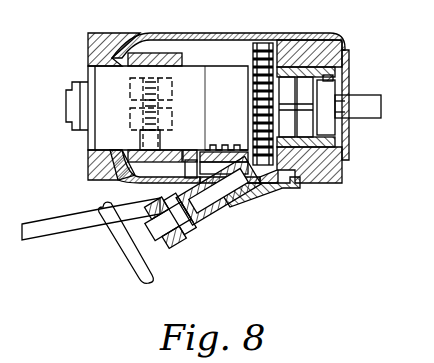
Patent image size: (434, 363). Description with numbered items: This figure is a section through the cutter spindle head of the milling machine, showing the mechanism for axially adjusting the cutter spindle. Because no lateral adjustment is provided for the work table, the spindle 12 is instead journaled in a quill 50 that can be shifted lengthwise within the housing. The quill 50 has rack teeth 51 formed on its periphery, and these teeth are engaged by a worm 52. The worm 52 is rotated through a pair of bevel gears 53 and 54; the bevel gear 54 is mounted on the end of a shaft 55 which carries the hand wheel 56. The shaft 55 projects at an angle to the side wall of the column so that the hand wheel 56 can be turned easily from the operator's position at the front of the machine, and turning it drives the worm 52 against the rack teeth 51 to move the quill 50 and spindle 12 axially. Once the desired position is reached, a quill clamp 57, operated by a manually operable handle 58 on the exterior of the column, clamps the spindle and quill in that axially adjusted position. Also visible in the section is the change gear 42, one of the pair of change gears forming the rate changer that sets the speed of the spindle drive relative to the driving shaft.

The spindle 12 is at (85, 84).
The change gear 42 is at (250, 80).
The quill 50 is at (205, 68).
The rack teeth 51 is at (228, 146).
The worm 52 is at (243, 206).
The bevel gear 53 is at (205, 150).
The bevel gear 54 is at (220, 232).
The shaft 55 is at (168, 245).
The hand wheel 56 is at (138, 280).
The quill clamp 57 is at (148, 127).
The handle 58 is at (63, 209).